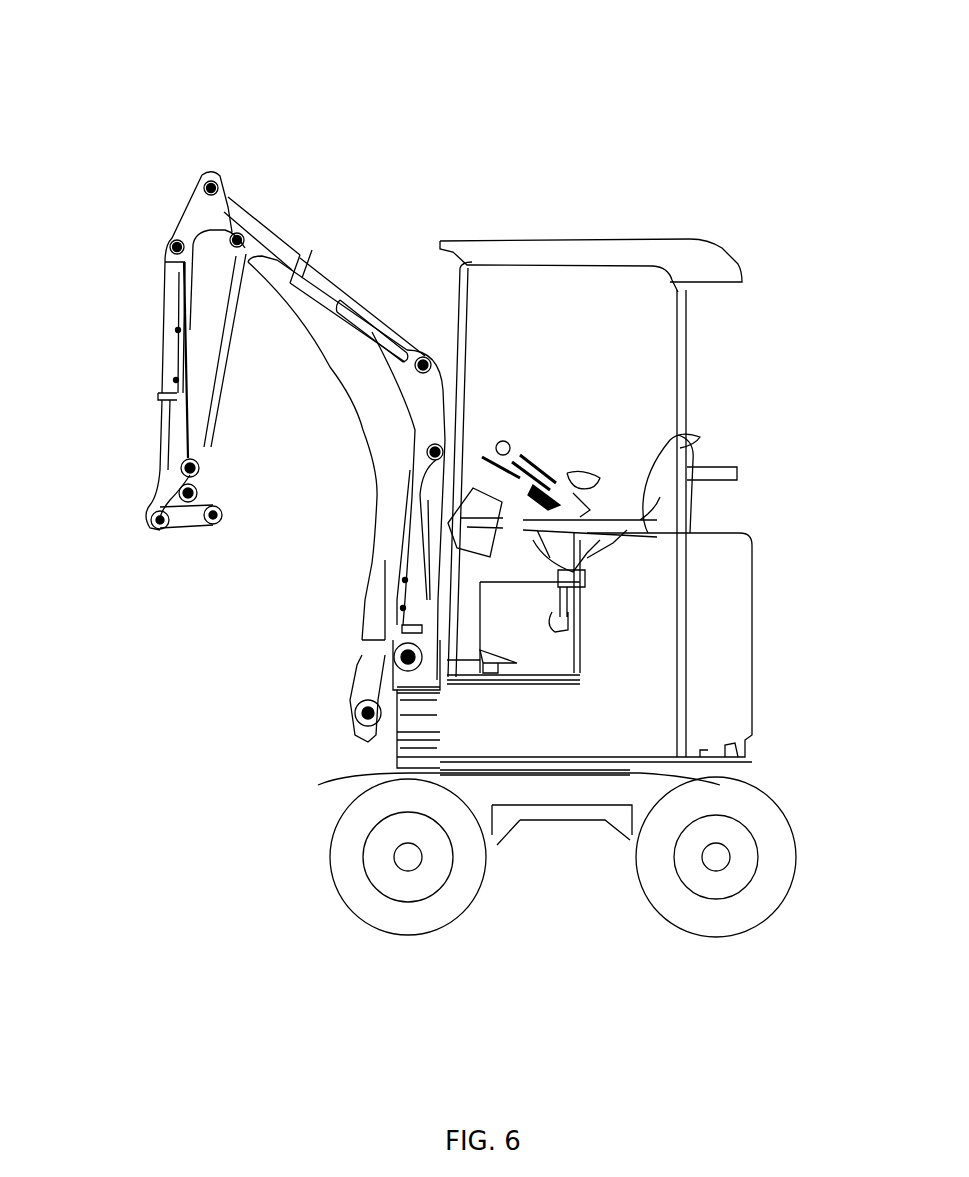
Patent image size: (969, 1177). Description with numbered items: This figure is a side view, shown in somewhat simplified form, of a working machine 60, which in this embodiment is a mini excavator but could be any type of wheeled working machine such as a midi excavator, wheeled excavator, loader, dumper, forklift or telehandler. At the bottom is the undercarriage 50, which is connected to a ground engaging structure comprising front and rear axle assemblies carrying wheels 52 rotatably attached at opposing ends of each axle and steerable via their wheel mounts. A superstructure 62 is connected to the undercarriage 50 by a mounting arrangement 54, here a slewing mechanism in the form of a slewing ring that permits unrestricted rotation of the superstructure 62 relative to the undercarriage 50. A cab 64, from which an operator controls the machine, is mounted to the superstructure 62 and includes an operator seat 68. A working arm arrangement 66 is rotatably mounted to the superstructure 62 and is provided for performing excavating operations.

The working machine 60 is at (376, 130).
The working arm arrangement 66 is at (212, 328).
The cab 64 is at (700, 264).
The operator seat 68 is at (658, 478).
The superstructure 62 is at (725, 617).
The mounting arrangement 54 is at (527, 765).
The undercarriage 50 is at (542, 792).
The wheels 52 is at (386, 913).